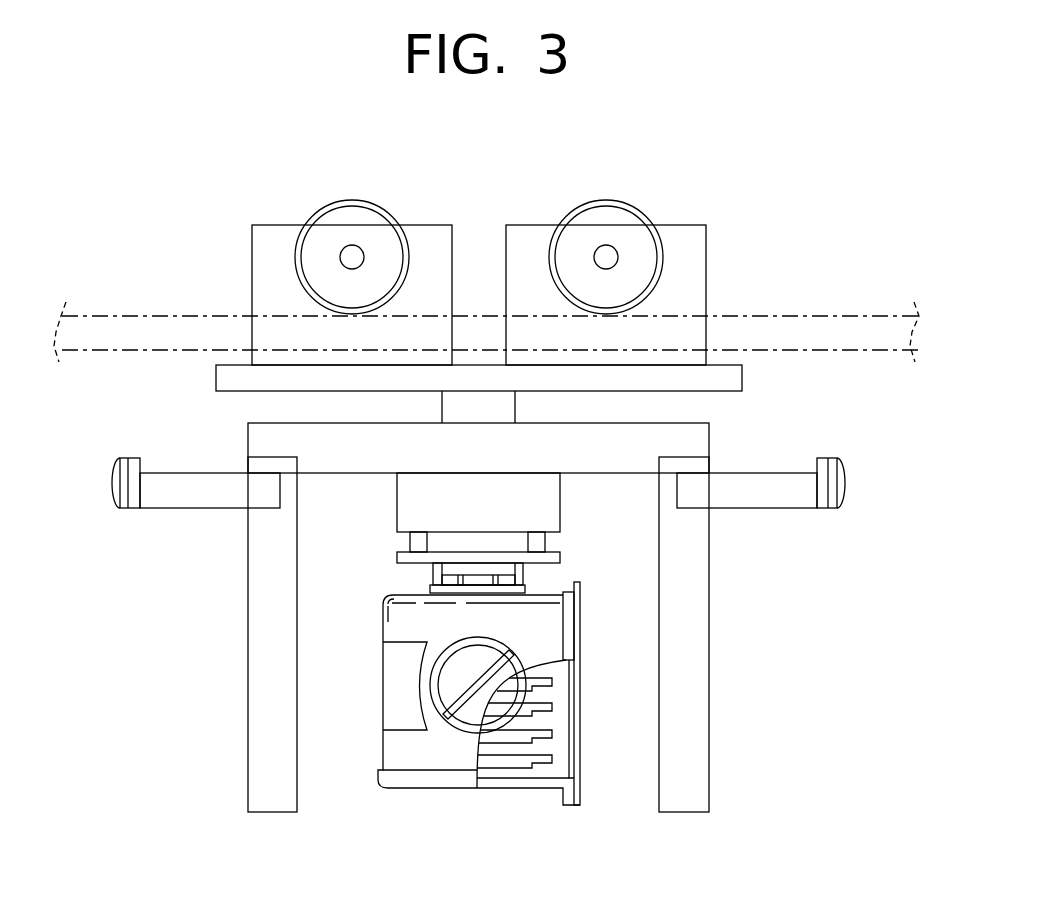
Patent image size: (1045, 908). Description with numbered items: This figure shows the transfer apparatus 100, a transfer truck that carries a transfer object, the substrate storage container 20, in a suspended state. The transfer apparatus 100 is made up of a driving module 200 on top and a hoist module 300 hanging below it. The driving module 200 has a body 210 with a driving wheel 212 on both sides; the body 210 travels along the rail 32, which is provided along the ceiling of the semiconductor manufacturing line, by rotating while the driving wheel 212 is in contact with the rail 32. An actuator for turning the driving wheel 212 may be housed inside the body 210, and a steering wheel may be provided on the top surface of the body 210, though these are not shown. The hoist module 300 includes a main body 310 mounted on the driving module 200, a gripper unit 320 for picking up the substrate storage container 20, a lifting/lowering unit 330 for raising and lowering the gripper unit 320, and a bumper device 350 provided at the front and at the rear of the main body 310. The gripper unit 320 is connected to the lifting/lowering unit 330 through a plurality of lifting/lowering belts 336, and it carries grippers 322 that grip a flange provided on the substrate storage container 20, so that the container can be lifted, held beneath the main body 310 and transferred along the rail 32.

The substrate storage container 20 is at (479, 797).
The rail 32 is at (118, 316).
The transfer apparatus 100 is at (476, 272).
The driving module 200 is at (335, 247).
The body 210 is at (427, 225).
The driving wheel 212 is at (354, 215).
The hoist module 300 is at (482, 635).
The main body 310 is at (713, 703).
The gripper unit 320 is at (408, 598).
The gripper 322 is at (418, 571).
The lifting/lowering unit 330 is at (395, 510).
The lifting/lowering belt 336 is at (547, 541).
The bumper device 350 is at (792, 516).